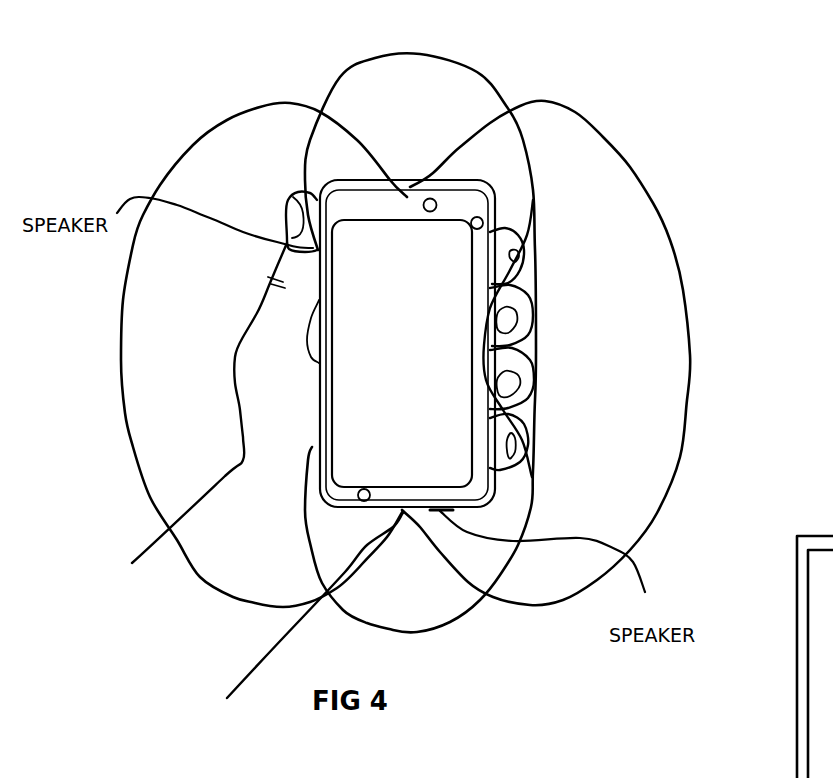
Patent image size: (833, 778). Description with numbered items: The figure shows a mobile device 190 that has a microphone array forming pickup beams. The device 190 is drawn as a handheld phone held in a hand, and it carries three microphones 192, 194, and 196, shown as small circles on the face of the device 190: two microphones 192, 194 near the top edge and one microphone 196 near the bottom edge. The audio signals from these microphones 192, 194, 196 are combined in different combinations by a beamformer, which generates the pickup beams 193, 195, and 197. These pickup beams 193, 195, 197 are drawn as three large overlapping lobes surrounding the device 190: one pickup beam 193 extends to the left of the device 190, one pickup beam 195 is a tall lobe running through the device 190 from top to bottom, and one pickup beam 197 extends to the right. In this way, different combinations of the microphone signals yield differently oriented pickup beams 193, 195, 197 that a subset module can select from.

The device 190 is at (350, 175).
The microphone 192 is at (436, 204).
The microphone 194 is at (483, 222).
The microphone 196 is at (358, 495).
The pickup beam 193 is at (228, 594).
The pickup beam 195 is at (457, 628).
The pickup beam 197 is at (687, 353).